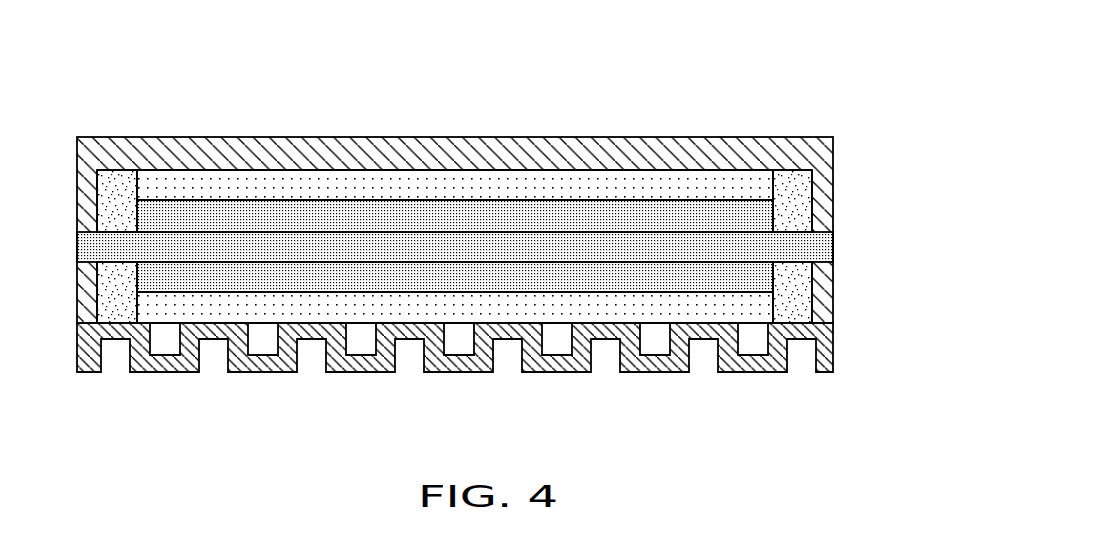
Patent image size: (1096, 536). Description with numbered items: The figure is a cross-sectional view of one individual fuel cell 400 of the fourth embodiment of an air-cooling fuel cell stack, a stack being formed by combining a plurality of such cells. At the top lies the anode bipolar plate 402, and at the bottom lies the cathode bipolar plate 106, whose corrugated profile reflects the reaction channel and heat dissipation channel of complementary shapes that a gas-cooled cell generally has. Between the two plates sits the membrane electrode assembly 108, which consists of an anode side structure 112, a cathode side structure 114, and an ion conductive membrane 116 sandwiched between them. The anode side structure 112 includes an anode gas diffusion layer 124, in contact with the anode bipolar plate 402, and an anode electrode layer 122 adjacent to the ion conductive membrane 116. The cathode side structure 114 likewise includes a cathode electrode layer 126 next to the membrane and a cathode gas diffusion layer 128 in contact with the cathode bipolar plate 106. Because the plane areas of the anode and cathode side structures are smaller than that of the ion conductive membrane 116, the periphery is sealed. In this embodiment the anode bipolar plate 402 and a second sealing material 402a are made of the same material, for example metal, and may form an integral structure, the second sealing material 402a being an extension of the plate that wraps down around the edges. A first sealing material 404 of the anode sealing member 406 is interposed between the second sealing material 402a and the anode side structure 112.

The fuel cell 400 is at (141, 91).
The anode bipolar plate 402 is at (701, 150).
The second sealing material 402a is at (818, 187).
The first sealing material 404 is at (118, 213).
The anode sealing member 406 is at (879, 195).
The membrane electrode assembly 108 is at (832, 2).
The anode side structure 112 is at (602, 83).
The cathode side structure 114 is at (447, 83).
The ion conductive membrane 116 is at (92, 247).
The anode electrode layer 122 is at (593, 213).
The anode gas diffusion layer 124 is at (515, 185).
The cathode electrode layer 126 is at (365, 275).
The cathode gas diffusion layer 128 is at (442, 310).
The cathode bipolar plate 106 is at (753, 363).